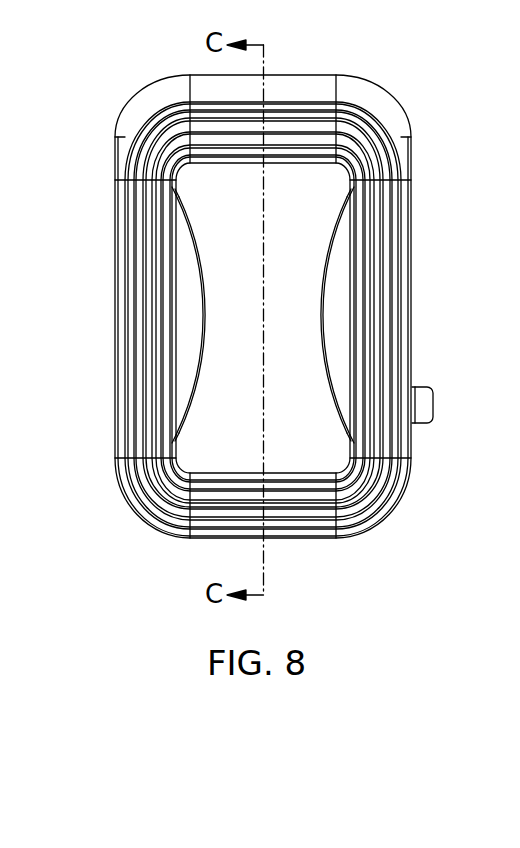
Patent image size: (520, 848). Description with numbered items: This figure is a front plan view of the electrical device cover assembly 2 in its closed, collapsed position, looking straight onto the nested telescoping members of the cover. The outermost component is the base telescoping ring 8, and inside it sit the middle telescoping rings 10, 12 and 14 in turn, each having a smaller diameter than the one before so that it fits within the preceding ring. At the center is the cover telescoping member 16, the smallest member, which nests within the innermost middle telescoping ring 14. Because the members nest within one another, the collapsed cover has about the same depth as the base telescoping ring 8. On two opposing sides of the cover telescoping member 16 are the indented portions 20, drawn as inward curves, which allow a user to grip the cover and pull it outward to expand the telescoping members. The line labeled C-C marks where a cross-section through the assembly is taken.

The electrical device cover assembly 2 is at (408, 552).
The base telescoping ring 8 is at (400, 493).
The middle telescoping ring 10 is at (393, 443).
The middle telescoping ring 12 is at (378, 407).
The middle telescoping ring 14 is at (363, 349).
The cover telescoping member 16 is at (245, 441).
The indented portions 20 is at (337, 312).